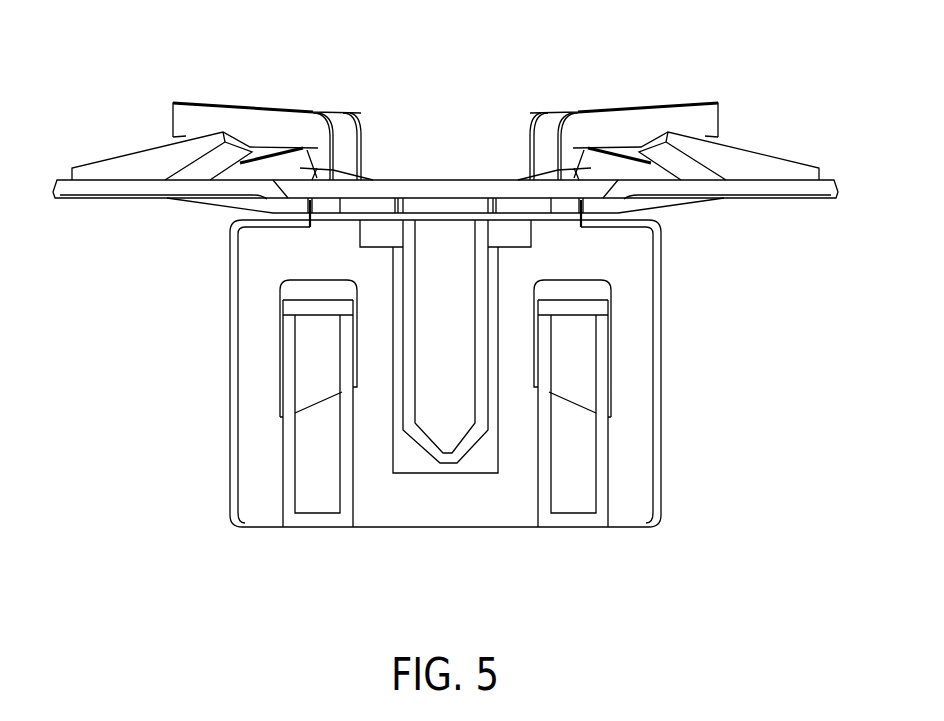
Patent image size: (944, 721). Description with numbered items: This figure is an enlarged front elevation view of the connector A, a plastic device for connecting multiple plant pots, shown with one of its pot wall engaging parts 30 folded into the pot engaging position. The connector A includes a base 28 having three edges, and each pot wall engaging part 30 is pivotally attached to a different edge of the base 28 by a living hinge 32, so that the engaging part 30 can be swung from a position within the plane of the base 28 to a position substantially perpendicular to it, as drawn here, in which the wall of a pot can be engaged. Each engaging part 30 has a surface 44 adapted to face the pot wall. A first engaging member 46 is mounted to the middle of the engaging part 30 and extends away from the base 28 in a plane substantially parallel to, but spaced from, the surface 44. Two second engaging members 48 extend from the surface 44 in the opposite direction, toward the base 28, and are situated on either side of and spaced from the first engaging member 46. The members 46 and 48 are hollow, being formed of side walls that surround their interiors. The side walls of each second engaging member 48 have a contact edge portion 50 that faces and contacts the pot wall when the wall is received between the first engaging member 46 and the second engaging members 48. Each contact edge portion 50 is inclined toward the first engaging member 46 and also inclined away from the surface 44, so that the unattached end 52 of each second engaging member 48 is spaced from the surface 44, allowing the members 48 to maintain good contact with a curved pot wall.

The base 28 is at (453, 190).
The pot wall engaging part 30 is at (120, 198).
The living hinge 32 is at (330, 214).
The surface 44 is at (407, 502).
The first engaging member 46 is at (280, 127).
The second engaging member 48 is at (143, 163).
The contact edge portion 50 is at (290, 457).
The unattached end 52 is at (245, 142).
The connector A is at (196, 348).